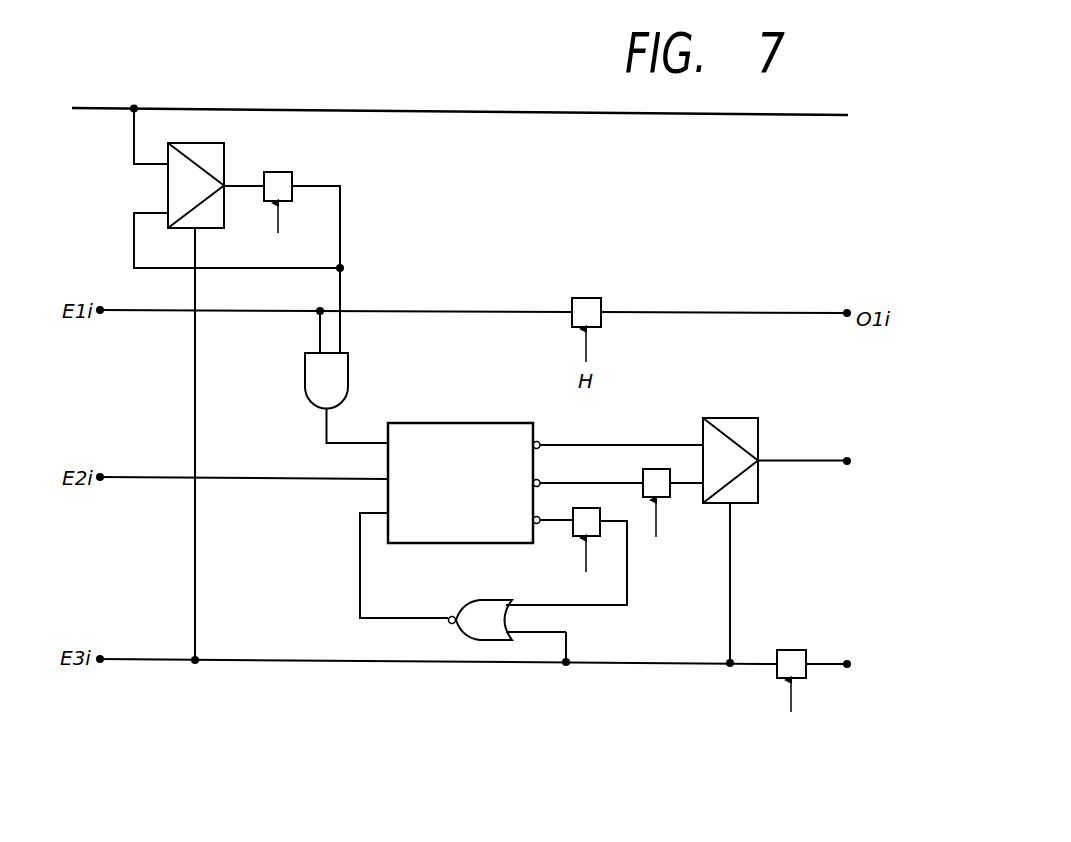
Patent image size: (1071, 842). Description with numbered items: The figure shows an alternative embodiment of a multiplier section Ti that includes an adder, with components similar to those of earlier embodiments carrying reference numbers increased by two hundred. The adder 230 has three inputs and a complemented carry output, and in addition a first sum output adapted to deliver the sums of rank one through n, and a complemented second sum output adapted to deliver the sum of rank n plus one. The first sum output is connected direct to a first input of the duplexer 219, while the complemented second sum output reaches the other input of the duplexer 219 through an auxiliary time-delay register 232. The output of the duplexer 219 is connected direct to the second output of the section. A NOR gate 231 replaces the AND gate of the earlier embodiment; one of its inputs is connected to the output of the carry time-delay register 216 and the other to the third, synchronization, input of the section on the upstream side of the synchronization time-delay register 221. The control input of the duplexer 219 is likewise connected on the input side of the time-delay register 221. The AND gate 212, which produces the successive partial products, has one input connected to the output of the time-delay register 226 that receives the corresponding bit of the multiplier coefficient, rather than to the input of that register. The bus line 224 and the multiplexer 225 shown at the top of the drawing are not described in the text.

The multiplier section Ti is at (422, 98).
The bus line 224 is at (223, 108).
The multiplexer 225 is at (168, 186).
The time-delay register 226 is at (278, 172).
The AND gate 212 is at (340, 388).
The adder 230 is at (463, 423).
The carry time-delay register 216 is at (573, 537).
The auxiliary time-delay register 232 is at (656, 469).
The duplexer 219 is at (738, 418).
The NOR gate 231 is at (480, 615).
The synchronization time-delay register 221 is at (792, 650).